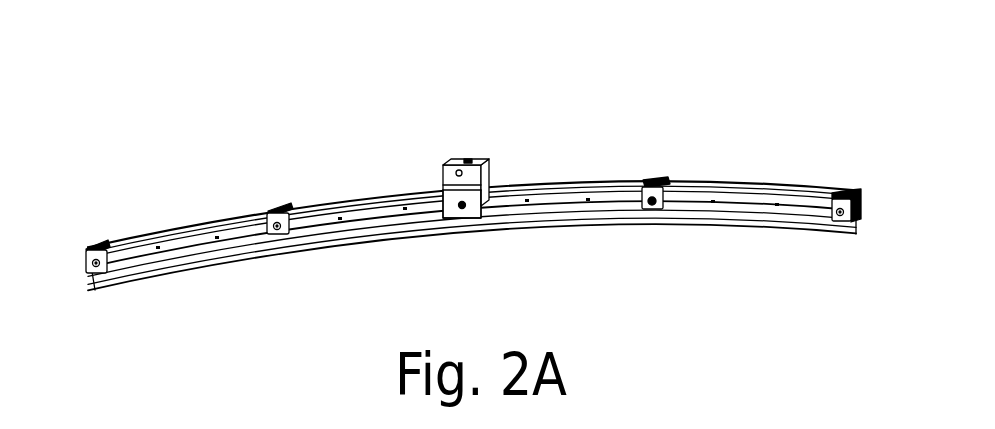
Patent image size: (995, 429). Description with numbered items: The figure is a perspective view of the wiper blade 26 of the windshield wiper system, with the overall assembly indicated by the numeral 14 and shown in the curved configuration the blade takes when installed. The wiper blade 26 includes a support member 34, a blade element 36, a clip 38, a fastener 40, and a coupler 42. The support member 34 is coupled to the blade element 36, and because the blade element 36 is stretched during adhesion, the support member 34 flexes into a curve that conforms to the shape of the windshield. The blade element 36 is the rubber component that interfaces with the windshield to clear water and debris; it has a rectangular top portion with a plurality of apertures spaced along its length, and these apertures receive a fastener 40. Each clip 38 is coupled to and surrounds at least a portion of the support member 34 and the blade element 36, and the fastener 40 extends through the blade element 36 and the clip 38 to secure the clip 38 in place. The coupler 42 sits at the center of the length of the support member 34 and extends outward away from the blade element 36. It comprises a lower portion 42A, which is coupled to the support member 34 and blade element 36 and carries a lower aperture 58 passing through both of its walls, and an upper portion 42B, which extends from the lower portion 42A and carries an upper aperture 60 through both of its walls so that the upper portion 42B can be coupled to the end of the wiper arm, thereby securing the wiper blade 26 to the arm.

The solar module mounting assembly 14 is at (130, 100).
The wiper blade 26 is at (332, 138).
The support member 34 is at (572, 178).
The blade element 36 is at (773, 232).
The clip 38 is at (282, 198).
The fastener 40 is at (652, 212).
The coupler 42 is at (451, 176).
The lower portion 42A is at (443, 212).
The upper portion 42B is at (440, 175).
The lower aperture 58 is at (463, 207).
The upper aperture 60 is at (468, 161).